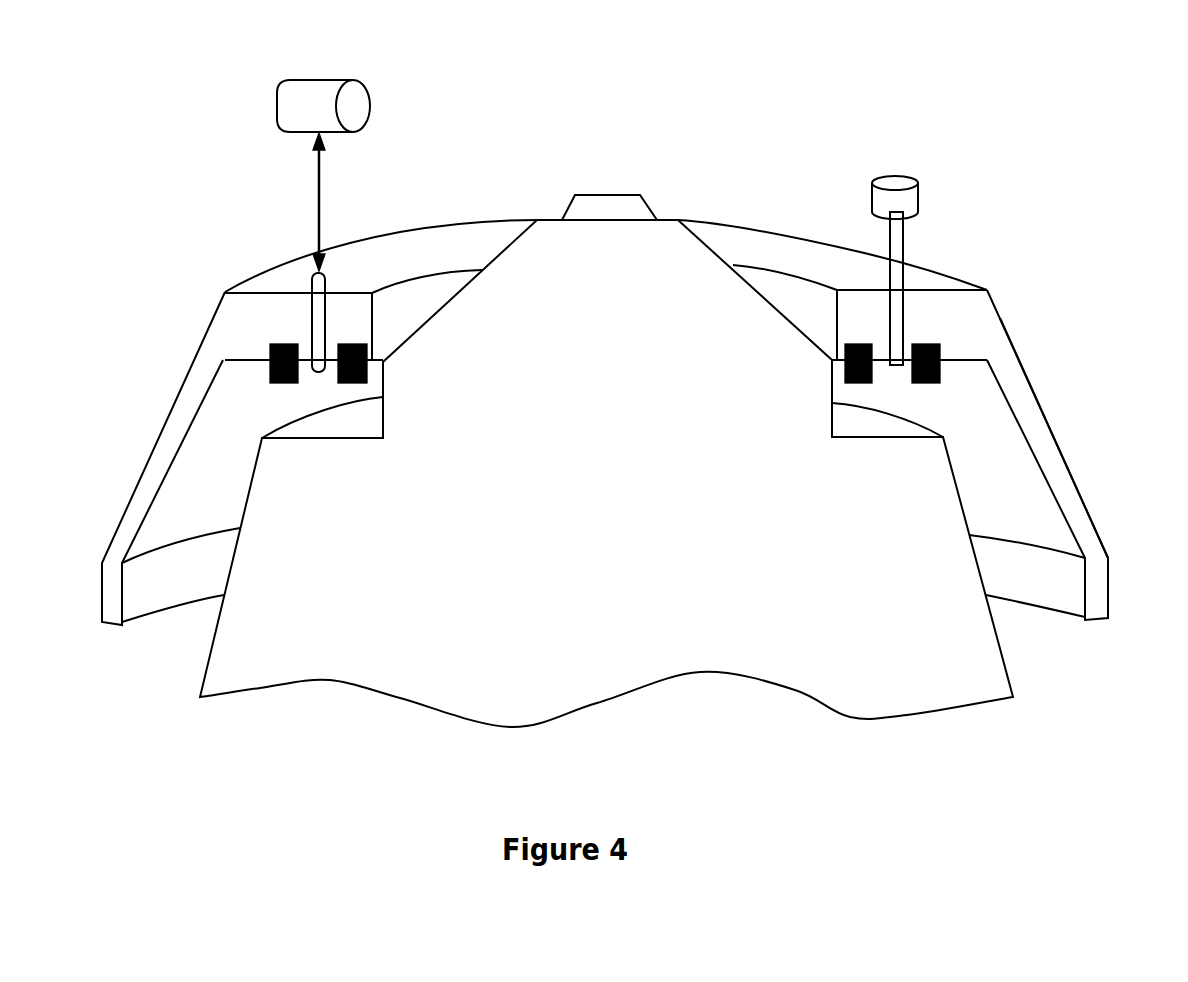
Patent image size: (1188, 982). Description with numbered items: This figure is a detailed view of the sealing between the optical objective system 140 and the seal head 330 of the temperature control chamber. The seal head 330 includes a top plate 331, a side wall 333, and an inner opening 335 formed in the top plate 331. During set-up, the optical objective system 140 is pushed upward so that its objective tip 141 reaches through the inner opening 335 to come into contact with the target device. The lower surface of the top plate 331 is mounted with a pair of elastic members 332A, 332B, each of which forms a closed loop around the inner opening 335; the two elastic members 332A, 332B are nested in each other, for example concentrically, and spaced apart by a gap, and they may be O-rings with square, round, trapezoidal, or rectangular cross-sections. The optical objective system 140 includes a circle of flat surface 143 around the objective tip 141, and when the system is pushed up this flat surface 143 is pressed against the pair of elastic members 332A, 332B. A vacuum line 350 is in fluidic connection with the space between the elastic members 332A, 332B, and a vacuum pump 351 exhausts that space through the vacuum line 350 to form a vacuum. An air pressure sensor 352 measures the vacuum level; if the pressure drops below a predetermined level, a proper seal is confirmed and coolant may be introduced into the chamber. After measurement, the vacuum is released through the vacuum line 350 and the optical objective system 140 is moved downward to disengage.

The optical objective system 140 is at (578, 570).
The objective tip 141 is at (618, 207).
The flat surface 143 is at (312, 426).
The seal head 330 is at (1044, 405).
The top plate 331 is at (452, 243).
The elastic member 332A is at (870, 338).
The elastic member 332B is at (264, 338).
The side wall 333 is at (1073, 477).
The inner opening 335 is at (786, 283).
The vacuum line 350 is at (317, 265).
The vacuum pump 351 is at (358, 98).
The air pressure sensor 352 is at (893, 182).